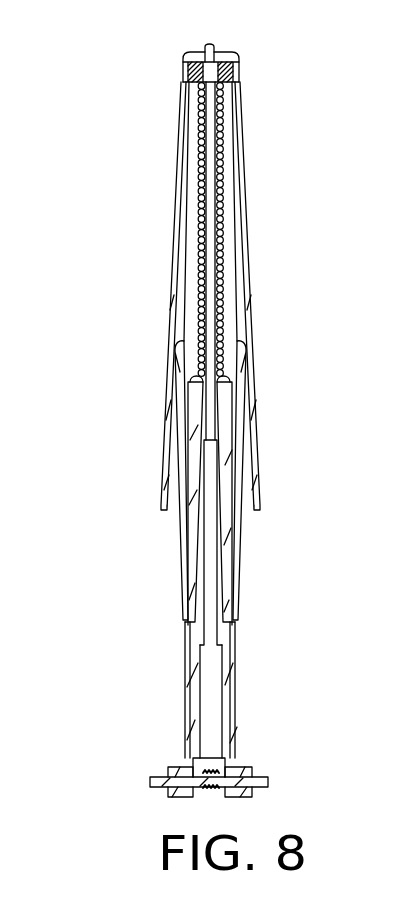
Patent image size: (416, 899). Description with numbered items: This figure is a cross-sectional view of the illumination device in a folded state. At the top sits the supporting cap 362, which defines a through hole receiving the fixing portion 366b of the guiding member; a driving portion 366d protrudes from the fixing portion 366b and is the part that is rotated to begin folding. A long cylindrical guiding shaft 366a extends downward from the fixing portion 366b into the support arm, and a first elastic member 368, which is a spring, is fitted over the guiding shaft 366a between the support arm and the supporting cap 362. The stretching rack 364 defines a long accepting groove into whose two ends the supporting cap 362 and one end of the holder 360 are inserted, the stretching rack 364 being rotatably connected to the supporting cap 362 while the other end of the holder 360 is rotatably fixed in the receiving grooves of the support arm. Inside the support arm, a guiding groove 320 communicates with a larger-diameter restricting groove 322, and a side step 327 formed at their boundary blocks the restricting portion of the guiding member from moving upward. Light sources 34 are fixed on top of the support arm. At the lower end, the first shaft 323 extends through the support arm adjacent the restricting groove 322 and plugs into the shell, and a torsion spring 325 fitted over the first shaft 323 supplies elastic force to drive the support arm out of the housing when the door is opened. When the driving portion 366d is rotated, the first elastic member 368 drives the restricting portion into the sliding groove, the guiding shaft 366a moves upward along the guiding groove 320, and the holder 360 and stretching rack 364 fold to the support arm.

The light sources 34 is at (198, 378).
The guiding groove 320 is at (208, 563).
The restricting groove 322 is at (214, 712).
The first shaft 323 is at (267, 780).
The torsion spring 325 is at (202, 770).
The side step 327 is at (200, 645).
The holder 360 is at (240, 418).
The supporting cap 362 is at (185, 62).
The stretching rack 364 is at (248, 243).
The guiding shaft 366a is at (218, 187).
The fixing portion 366b is at (187, 54).
The driving portion 366d is at (214, 48).
The first elastic member 368 is at (219, 132).